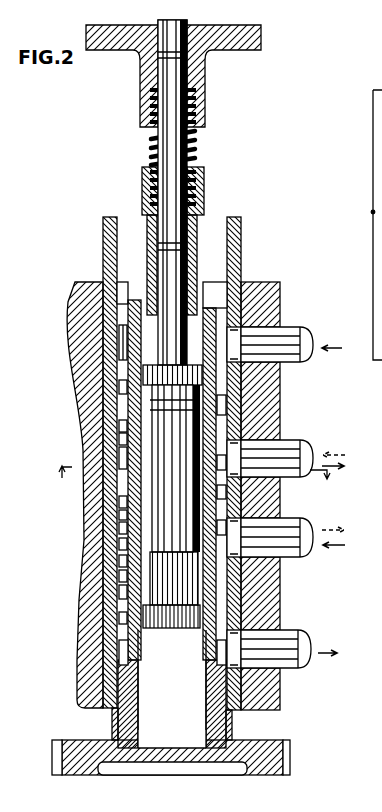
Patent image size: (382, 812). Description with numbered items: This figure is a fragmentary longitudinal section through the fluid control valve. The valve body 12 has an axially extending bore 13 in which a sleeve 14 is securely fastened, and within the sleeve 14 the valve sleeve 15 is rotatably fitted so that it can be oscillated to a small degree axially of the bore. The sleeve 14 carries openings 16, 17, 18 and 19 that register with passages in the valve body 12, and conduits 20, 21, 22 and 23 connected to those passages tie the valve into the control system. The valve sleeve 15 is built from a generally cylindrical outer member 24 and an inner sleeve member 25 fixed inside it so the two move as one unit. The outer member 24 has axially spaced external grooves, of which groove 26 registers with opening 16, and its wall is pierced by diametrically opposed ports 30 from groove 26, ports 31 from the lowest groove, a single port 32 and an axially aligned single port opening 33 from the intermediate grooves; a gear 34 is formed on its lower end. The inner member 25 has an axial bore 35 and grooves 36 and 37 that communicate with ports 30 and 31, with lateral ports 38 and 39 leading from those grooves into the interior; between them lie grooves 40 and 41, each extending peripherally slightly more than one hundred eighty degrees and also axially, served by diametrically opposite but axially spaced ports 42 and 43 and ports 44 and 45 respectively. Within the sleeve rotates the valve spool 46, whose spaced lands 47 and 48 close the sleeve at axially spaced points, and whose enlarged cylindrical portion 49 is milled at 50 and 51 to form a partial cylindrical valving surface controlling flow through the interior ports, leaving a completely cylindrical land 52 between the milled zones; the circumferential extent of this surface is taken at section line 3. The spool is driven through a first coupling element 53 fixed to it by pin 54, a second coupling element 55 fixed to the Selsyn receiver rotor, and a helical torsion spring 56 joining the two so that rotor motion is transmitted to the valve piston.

The section line 3- 3 is at (194, 479).
The valve body 12 is at (278, 284).
The bore 13 is at (278, 561).
The sleeve 14 is at (262, 693).
The valve sleeve 15 is at (233, 728).
The opening 16 is at (240, 338).
The opening 17 is at (241, 452).
The opening 18 is at (241, 530).
The opening 19 is at (241, 640).
The conduit 20 is at (303, 336).
The conduit 21 is at (305, 446).
The conduit 22 is at (305, 526).
The conduit 23 is at (300, 638).
The outer member 24 is at (117, 732).
The inner sleeve member 25 is at (127, 718).
The groove 26 is at (121, 343).
The ports 30 is at (95, 334).
The ports 31 is at (123, 645).
The port 32 is at (122, 440).
The port opening 33 is at (123, 545).
The gear 34 is at (268, 775).
The bore 35 is at (204, 695).
The groove 36 is at (134, 360).
The groove 37 is at (123, 618).
The port 38 is at (122, 389).
The port 39 is at (123, 592).
The groove 40 is at (125, 438).
The groove 41 is at (120, 562).
The port 42 is at (150, 483).
The port 43 is at (235, 550).
The port 44 is at (123, 517).
The port 45 is at (230, 466).
The rotary valve spool 46 is at (165, 405).
The land 47 is at (148, 374).
The land 48 is at (181, 627).
The enlarged cylindrical portion 49 is at (123, 577).
The milled zone 50 is at (122, 456).
The milled zone 51 is at (123, 530).
The land 52 is at (123, 503).
The first coupling element 53 is at (204, 203).
The pin 54 is at (195, 277).
The second coupling element 55 is at (197, 71).
The helical torsion spring 56 is at (197, 154).